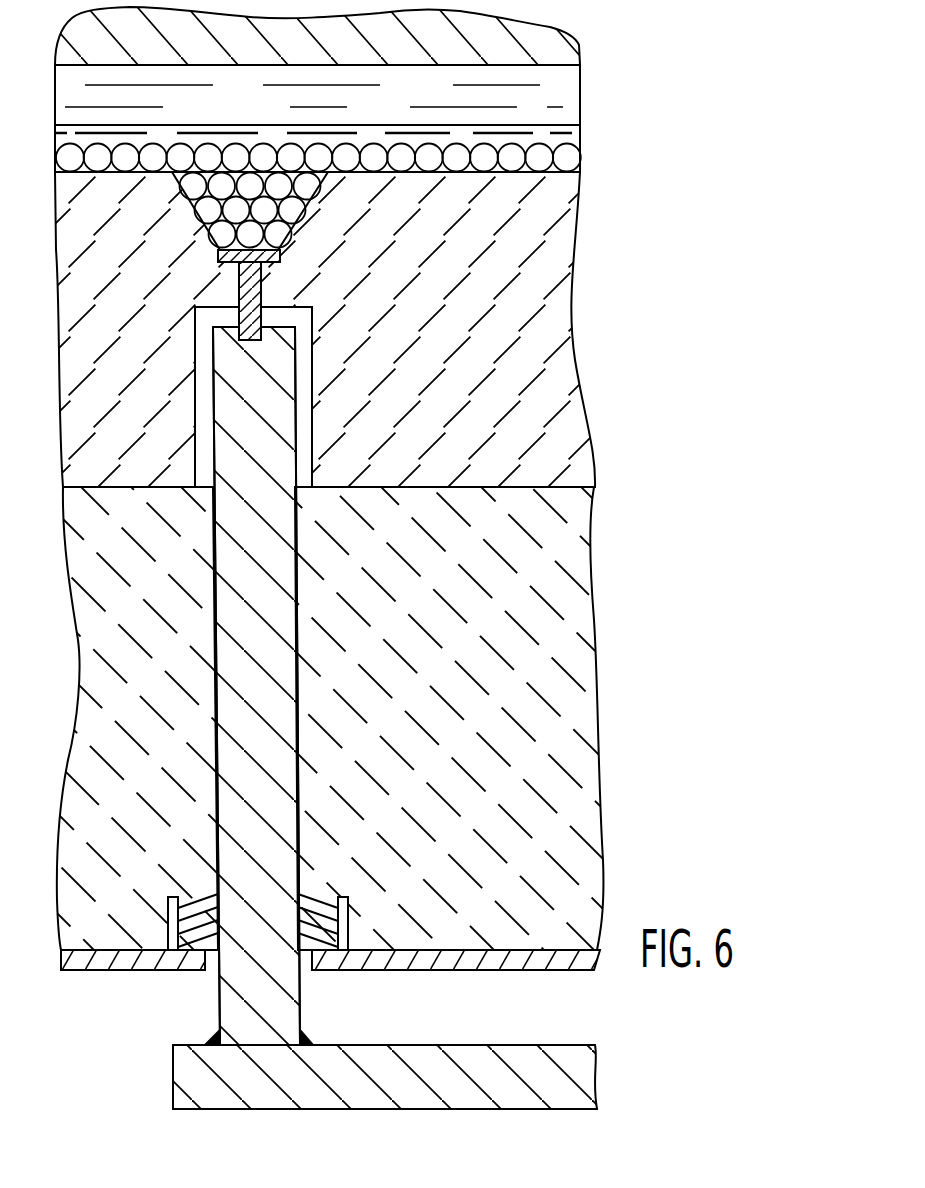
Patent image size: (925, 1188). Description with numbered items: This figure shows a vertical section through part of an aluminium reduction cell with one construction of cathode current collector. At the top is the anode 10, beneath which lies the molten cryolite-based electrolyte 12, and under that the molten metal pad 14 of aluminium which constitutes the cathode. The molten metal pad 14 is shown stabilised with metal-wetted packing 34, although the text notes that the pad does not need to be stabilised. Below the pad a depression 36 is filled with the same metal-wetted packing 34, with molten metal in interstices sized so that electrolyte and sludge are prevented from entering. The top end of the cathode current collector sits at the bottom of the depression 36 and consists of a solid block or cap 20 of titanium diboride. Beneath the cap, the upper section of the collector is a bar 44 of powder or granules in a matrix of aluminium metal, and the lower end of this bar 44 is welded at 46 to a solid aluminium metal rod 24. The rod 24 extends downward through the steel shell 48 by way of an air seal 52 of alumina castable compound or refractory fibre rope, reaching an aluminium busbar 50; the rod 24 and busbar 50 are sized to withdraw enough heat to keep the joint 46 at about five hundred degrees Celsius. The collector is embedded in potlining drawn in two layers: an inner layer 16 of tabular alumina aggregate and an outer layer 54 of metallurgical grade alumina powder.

The anode 10 is at (562, 50).
The molten cryolite-based electrolyte 12 is at (543, 104).
The molten metal pad 14 is at (570, 133).
The inner layer of potlining 16 is at (557, 268).
The solid block or cap 20 is at (263, 271).
The solid aluminium metal rod 24 is at (270, 572).
The metal-wetted packing 34 is at (235, 153).
The depression 36 is at (197, 229).
The bar 44 is at (240, 281).
The weld joint 46 is at (266, 324).
The steel shell 48 is at (63, 970).
The aluminium busbar 50 is at (373, 1095).
The air seal 52 is at (313, 918).
The outer layer of potlining 54 is at (583, 705).